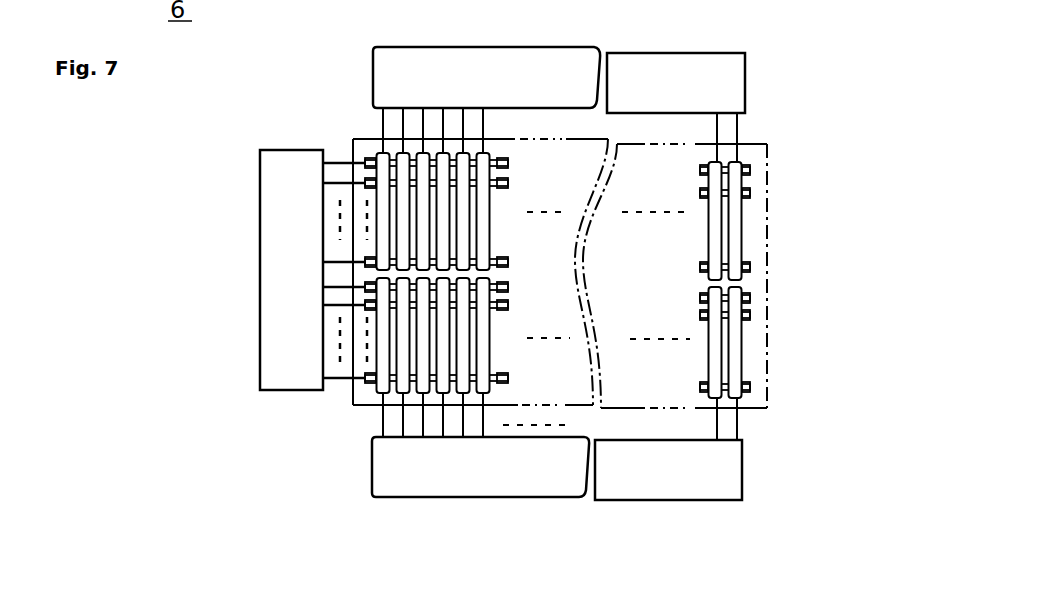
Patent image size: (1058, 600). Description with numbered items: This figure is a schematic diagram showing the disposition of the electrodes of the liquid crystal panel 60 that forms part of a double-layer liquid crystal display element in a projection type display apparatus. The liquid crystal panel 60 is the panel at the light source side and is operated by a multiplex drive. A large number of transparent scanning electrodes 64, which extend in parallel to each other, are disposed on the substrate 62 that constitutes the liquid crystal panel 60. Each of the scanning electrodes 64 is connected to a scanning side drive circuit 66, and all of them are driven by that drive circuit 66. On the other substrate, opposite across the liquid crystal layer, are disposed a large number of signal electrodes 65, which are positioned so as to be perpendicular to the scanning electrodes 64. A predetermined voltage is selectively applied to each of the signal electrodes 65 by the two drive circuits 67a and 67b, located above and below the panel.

The liquid crystal panel 60 is at (783, 158).
The substrate 62 is at (767, 277).
The scanning electrodes 64 is at (508, 163).
The signal electrodes 65 is at (500, 228).
The scanning side drive circuit 66 is at (290, 392).
The signal side drive circuit 67a is at (550, 60).
The signal side drive circuit 67b is at (548, 497).